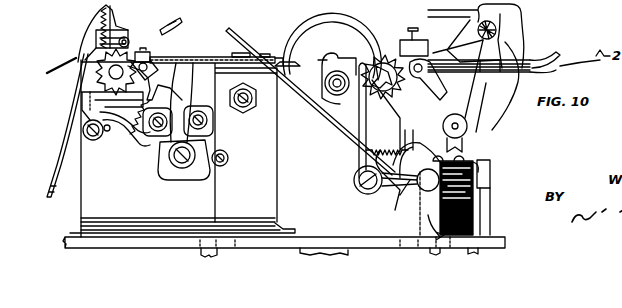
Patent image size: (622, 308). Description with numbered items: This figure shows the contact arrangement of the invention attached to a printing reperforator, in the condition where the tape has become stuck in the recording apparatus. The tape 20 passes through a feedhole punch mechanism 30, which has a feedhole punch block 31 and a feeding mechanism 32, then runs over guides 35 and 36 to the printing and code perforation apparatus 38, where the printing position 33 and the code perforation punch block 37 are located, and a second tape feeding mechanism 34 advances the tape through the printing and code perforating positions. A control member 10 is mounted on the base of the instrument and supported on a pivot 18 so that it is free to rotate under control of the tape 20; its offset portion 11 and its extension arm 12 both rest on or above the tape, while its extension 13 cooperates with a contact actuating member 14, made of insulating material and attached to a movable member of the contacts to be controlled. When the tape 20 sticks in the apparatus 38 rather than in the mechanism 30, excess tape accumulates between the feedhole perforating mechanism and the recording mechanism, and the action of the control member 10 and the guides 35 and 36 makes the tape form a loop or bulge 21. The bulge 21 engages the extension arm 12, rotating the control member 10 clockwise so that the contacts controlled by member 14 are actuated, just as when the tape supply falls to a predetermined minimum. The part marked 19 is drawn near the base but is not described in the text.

The control member 10 is at (338, 137).
The offset portion 11 is at (322, 64).
The extension arm 12 is at (233, 30).
The extension 13 is at (478, 153).
The contact actuating member 14 is at (490, 190).
The pivot 18 is at (403, 192).
The bracket 19 is at (440, 230).
The tape 20 is at (61, 127).
The bulge 21 is at (300, 80).
The feedhole punch mechanism 30 is at (480, 52).
The feedhole punch block 31 is at (403, 41).
The feeding mechanism 32 is at (382, 62).
The printing position 33 is at (143, 51).
The second tape feeding mechanism 34 is at (110, 70).
The guide 35 is at (363, 110).
The guide 36 is at (302, 118).
The code perforation punch block 37 is at (100, 43).
The printing and code perforation apparatus 38 is at (190, 72).